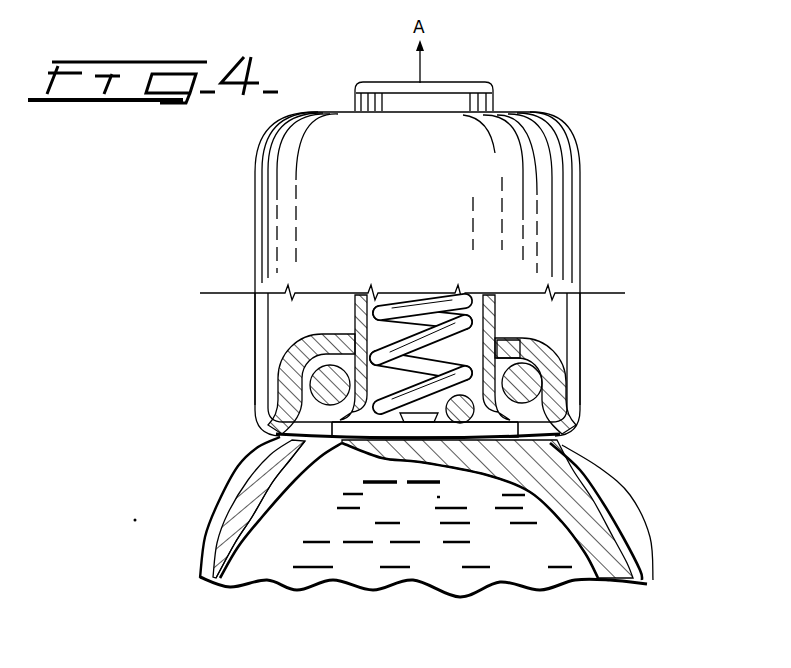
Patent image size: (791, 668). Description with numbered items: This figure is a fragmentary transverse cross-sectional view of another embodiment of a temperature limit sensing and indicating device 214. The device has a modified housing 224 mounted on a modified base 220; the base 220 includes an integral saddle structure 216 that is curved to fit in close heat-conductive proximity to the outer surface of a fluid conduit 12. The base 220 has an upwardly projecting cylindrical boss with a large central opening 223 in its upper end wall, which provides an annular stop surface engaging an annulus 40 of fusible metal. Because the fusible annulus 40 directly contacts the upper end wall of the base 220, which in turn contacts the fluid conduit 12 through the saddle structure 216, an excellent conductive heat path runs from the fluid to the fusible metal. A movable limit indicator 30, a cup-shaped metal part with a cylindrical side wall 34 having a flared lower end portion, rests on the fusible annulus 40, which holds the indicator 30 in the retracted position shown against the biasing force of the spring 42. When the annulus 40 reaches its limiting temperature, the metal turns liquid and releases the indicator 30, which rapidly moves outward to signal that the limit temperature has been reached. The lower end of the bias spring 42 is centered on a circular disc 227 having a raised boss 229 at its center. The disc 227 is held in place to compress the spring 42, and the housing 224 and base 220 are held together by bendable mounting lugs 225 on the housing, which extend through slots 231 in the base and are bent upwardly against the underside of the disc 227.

The fluid conduit 12 is at (240, 572).
The movable limit indicator 30 is at (482, 83).
The cylindrical side wall 34 is at (355, 303).
The annulus of fusible metal 40 is at (322, 388).
The bias spring 42 is at (447, 302).
The temperature limit sensing and indicating device 214 is at (600, 363).
The saddle structure 216 is at (588, 490).
The base 220 is at (580, 387).
The central opening 223 is at (330, 345).
The housing 224 is at (586, 218).
The bendable mounting lugs 225 is at (510, 343).
The circular disc 227 is at (384, 427).
The raised boss 229 is at (437, 441).
The slots 231 is at (556, 438).